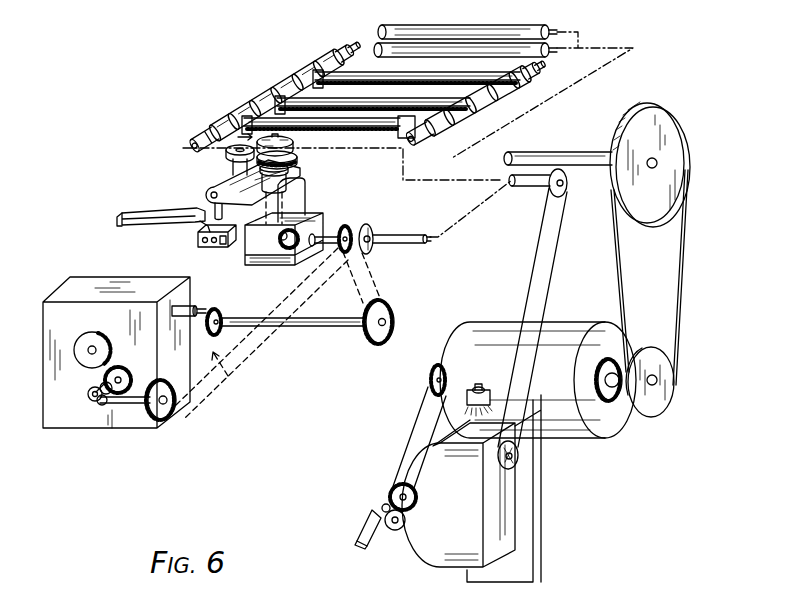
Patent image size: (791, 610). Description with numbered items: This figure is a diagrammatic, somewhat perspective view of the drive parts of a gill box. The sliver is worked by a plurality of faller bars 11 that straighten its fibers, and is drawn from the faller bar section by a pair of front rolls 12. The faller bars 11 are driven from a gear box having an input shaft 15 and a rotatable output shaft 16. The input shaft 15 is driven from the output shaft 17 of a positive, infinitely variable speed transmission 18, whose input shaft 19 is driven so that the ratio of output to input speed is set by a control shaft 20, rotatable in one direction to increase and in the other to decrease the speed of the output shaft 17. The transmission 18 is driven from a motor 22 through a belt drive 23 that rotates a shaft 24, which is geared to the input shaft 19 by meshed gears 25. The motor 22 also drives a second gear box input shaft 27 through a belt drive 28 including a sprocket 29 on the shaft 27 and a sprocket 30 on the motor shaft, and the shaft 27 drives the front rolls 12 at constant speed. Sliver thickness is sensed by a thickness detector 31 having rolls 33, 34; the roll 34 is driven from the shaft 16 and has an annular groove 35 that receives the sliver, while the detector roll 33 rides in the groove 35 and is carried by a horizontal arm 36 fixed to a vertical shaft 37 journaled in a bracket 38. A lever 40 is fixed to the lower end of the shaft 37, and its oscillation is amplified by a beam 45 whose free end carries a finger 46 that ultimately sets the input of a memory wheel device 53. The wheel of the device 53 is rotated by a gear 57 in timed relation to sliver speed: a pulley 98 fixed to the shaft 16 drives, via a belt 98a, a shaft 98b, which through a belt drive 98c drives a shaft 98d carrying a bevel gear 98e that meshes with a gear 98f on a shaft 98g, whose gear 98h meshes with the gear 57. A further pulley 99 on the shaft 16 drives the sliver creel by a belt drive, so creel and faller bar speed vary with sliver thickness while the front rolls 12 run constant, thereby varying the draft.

The faller bars 11 is at (330, 58).
The front rolls 12 is at (505, 24).
The thickness detector 31 is at (214, 122).
The detector roll 33 is at (230, 154).
The roll 34 is at (294, 148).
The annular groove 35 is at (298, 166).
The horizontal arm 36 is at (222, 181).
The vertical shaft 37 is at (213, 194).
The bracket 38 is at (306, 189).
The lever 40 is at (198, 238).
The beam 45 is at (145, 213).
The finger 46 is at (124, 226).
The memory wheel device 53 is at (125, 293).
The gear 57 is at (88, 345).
The pulley 98 is at (348, 230).
The belt 98a is at (372, 300).
The shaft 98b is at (286, 328).
The belt drive 98c is at (219, 371).
The shaft 98d is at (142, 418).
The bevel gear 98e is at (103, 410).
The gear 98f is at (89, 396).
The shaft 98g is at (120, 373).
The gear 98h is at (112, 388).
The pulley 99 is at (371, 231).
The output shaft 16 is at (408, 244).
The input shaft 15 is at (553, 192).
The input shaft 27 is at (600, 170).
The sprocket 29 is at (676, 192).
The belt drive 28 is at (668, 275).
The sprocket 30 is at (674, 400).
The motor 22 is at (502, 334).
The control shaft 20 is at (492, 374).
The belt drive 23 is at (408, 440).
The output shaft 17 is at (512, 463).
The input shaft 19 is at (406, 502).
The meshed gears 25 is at (390, 506).
The shaft 24 is at (398, 526).
The positive, infinitely variable speed transmission 18 is at (430, 560).